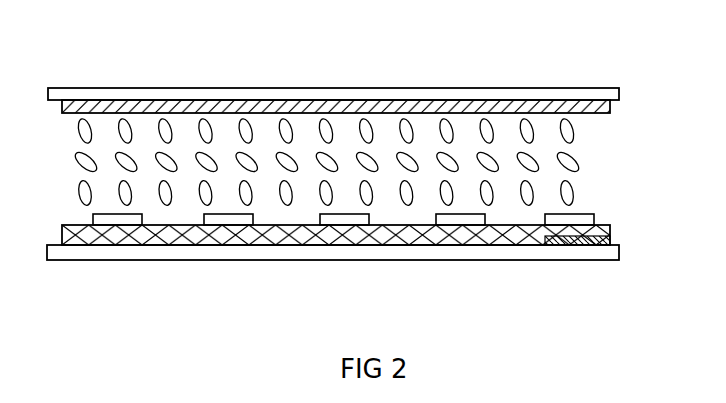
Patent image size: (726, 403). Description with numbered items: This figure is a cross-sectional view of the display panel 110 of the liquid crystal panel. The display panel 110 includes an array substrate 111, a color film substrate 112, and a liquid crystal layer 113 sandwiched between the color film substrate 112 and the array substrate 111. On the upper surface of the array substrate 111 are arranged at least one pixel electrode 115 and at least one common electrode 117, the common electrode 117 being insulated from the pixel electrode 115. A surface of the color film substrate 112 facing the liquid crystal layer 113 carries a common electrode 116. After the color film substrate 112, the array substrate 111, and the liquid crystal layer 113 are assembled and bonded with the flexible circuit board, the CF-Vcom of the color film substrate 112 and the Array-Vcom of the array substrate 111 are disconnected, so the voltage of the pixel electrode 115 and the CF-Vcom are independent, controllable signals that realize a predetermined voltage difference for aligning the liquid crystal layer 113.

The display panel 110 is at (296, 67).
The array substrate 111 is at (593, 262).
The color film substrate 112 is at (594, 87).
The liquid crystal layer 113 is at (592, 153).
The pixel electrode 115 is at (594, 215).
The common electrode 116 is at (610, 105).
The common electrode 117 is at (610, 240).